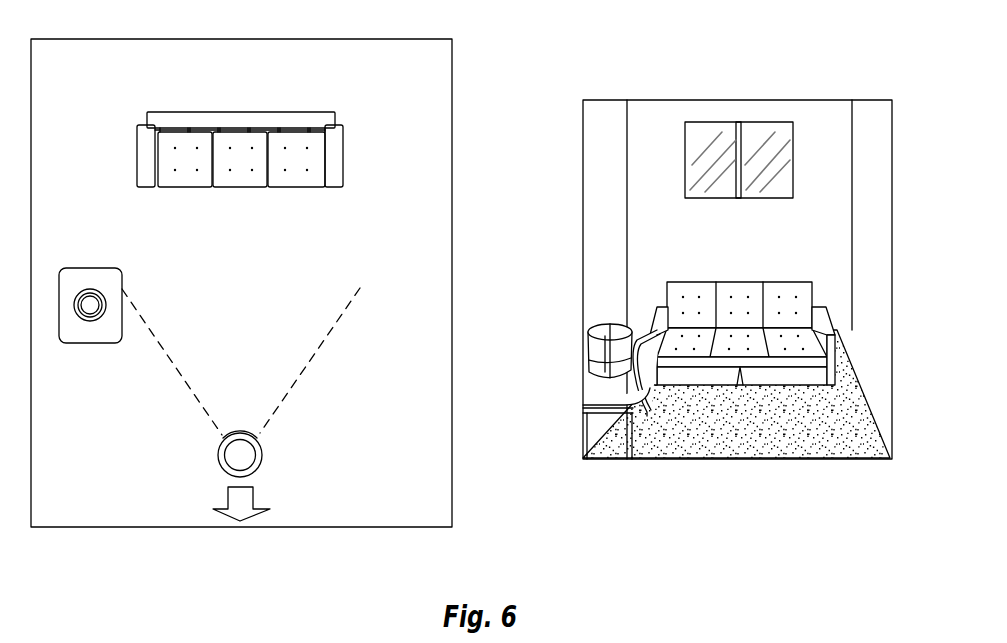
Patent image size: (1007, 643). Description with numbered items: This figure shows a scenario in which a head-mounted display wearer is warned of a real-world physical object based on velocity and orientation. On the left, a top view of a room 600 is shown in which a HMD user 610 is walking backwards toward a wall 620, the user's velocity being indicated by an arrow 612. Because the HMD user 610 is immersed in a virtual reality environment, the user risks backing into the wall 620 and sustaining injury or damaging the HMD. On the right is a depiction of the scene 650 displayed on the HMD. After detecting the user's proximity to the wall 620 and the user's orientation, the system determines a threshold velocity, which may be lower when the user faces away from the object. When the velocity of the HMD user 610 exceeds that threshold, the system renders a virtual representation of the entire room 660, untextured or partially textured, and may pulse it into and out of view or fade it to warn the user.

The room 600 is at (241, 266).
The HMD user 610 is at (262, 458).
The arrow 612 is at (227, 502).
The wall 620 is at (363, 527).
The scene 650 is at (765, 252).
The virtual representation of the entire room 660 is at (816, 225).